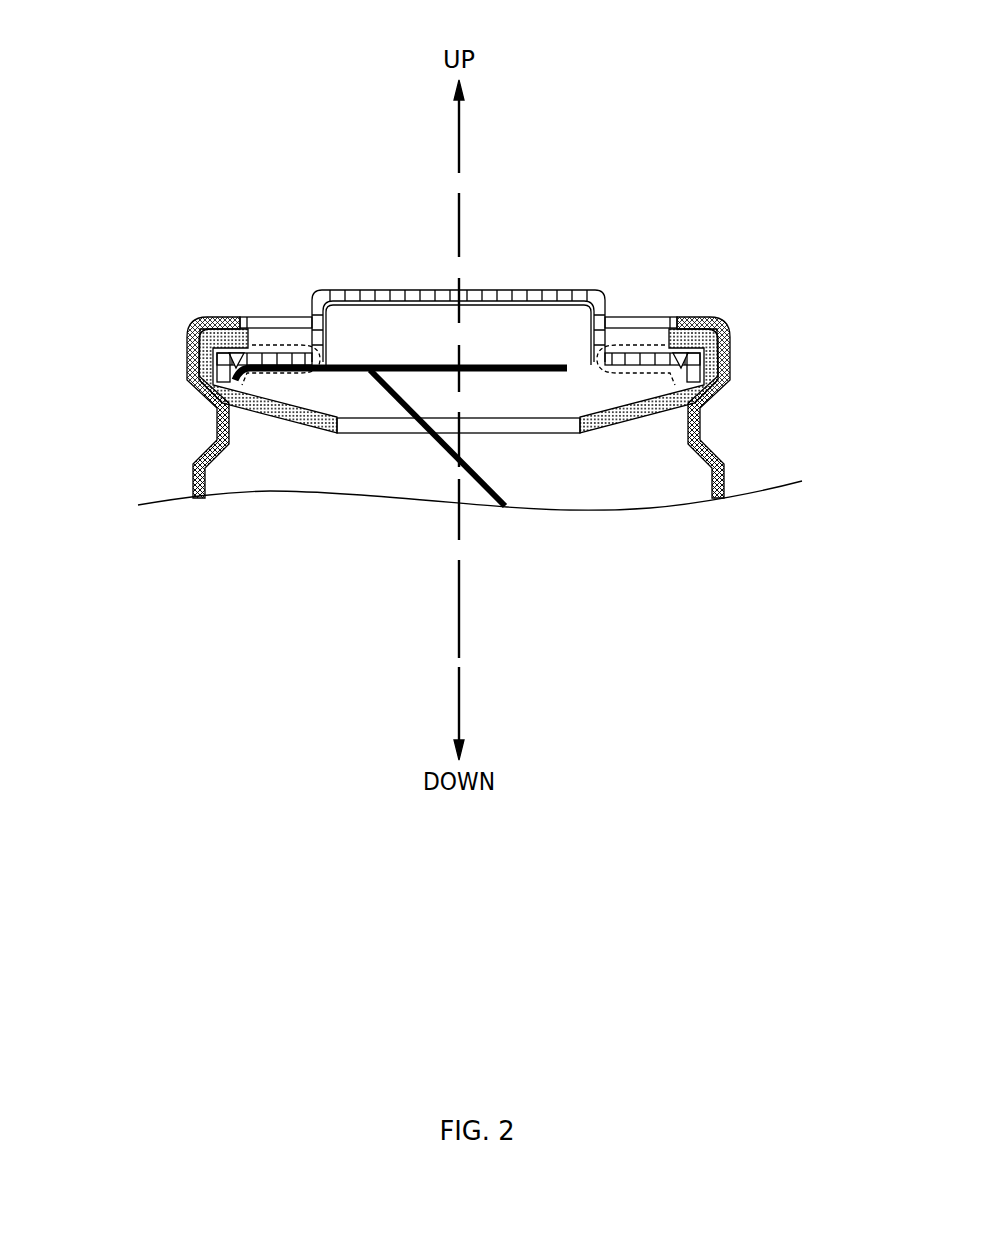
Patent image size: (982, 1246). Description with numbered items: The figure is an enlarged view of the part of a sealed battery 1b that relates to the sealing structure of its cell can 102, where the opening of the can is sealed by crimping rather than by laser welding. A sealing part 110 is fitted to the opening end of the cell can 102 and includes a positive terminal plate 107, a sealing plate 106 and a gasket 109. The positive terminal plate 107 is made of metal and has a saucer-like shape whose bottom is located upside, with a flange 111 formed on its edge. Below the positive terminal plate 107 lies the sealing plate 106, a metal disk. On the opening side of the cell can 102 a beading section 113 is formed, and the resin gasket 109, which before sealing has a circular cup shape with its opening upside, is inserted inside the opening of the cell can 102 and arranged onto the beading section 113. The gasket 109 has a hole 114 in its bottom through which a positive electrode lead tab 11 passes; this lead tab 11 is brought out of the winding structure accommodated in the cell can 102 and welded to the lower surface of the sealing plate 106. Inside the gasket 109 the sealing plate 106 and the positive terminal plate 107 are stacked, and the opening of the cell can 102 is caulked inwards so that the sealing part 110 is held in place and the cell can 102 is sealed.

The sealed battery 1b is at (380, 152).
The positive electrode lead tab 11 is at (489, 486).
The cell can 102 is at (185, 368).
The sealing plate 106 is at (573, 352).
The positive terminal plate 107 is at (588, 302).
The gasket 109 is at (543, 207).
The sealing part 110 is at (458, 299).
The flange 111 is at (272, 345).
The beading section 113 is at (200, 420).
The hole 114 is at (380, 432).